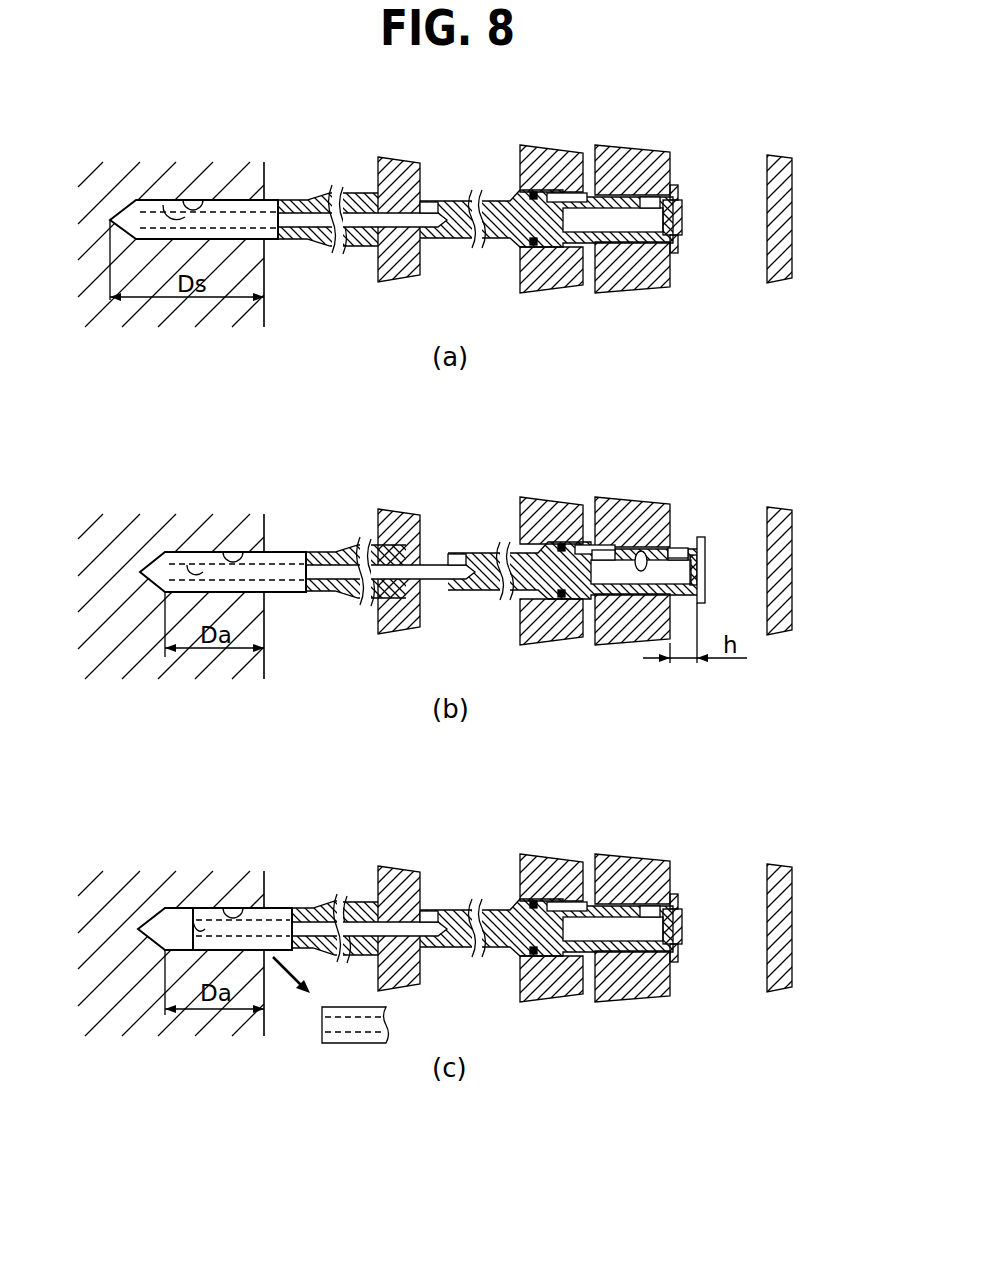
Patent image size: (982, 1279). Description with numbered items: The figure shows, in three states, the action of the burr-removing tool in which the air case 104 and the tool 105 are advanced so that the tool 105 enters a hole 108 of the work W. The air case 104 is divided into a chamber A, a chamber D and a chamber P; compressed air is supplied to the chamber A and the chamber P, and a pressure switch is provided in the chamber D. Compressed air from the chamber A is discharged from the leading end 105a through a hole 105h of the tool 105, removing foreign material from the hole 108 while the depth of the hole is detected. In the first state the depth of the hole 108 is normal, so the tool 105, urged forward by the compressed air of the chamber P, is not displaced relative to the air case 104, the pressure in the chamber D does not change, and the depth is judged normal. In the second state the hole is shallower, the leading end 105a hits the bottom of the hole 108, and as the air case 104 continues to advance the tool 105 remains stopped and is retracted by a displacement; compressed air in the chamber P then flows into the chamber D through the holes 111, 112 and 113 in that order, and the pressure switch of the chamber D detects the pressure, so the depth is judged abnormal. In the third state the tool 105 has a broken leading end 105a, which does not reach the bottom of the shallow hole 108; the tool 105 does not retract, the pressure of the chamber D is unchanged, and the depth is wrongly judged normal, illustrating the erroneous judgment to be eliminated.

The air case 104 is at (798, 216).
The tool 105 is at (320, 192).
The leading end 105a is at (127, 218).
The hole 105h is at (163, 205).
The hole 108 is at (183, 200).
The hole 111 is at (682, 553).
The hole 112 is at (641, 556).
The hole 113 is at (608, 552).
The work W is at (253, 182).
The chamber D is at (589, 162).
The chamber A is at (469, 168).
The chamber P is at (724, 162).